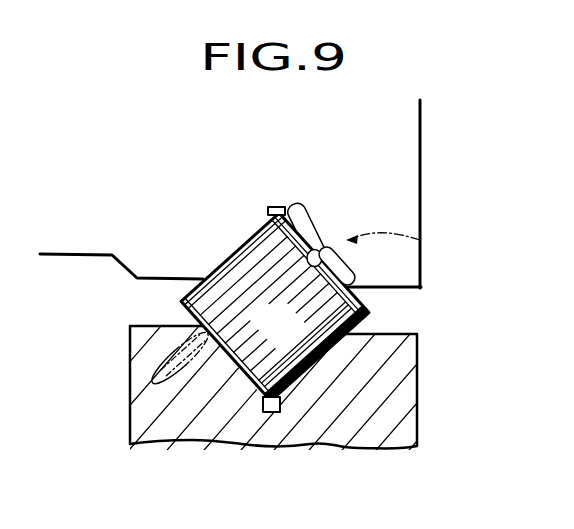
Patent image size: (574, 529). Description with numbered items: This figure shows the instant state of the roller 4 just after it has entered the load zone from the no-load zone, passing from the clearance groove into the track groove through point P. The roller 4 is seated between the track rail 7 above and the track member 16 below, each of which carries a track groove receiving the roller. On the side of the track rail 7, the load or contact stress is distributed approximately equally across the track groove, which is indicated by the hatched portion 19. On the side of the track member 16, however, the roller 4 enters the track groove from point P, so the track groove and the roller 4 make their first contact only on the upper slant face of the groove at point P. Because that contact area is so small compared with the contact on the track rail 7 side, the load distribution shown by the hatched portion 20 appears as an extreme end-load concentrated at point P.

The roller 4 is at (320, 322).
The track rail 7 is at (395, 153).
The track member 16 is at (378, 393).
The hatched portion 19 is at (420, 242).
The hatched portion 20 is at (166, 351).
The point P is at (225, 322).